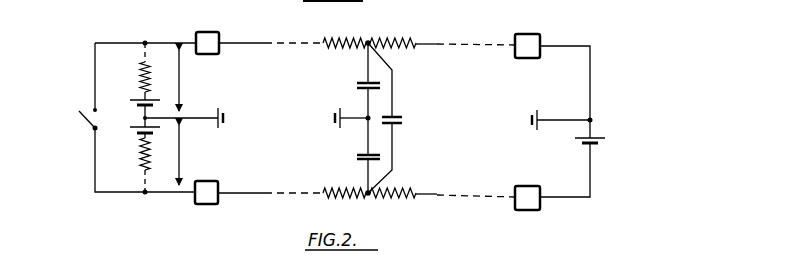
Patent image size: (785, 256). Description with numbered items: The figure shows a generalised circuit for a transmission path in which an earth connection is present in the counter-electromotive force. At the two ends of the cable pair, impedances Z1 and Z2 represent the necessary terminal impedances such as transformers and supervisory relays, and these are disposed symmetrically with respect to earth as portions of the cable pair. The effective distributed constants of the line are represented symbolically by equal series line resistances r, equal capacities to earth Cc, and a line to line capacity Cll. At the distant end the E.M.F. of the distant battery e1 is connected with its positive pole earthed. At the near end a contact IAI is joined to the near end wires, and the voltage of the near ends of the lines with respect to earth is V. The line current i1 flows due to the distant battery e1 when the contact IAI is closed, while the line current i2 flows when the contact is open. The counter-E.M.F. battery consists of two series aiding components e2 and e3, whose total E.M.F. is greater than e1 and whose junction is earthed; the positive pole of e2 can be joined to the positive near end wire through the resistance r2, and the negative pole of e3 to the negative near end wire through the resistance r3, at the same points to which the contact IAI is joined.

The contact IAI is at (76, 121).
The resistance r2 is at (133, 77).
The resistance r3 is at (133, 154).
The counter-E.M.F. battery component e2 is at (133, 104).
The counter-E.M.F. battery component e3 is at (133, 133).
The E.M.F. of the distant battery e1 is at (601, 141).
The voltage of near end of line with respect to earth V is at (177, 117).
The terminal impedance Z1 is at (207, 118).
The terminal impedance Z2 is at (527, 122).
The series line resistance r is at (369, 122).
The capacity to earth Cc is at (356, 122).
The line to line capacity Cll is at (395, 118).
The line current i1 is at (283, 33).
The line current i2 is at (242, 18).